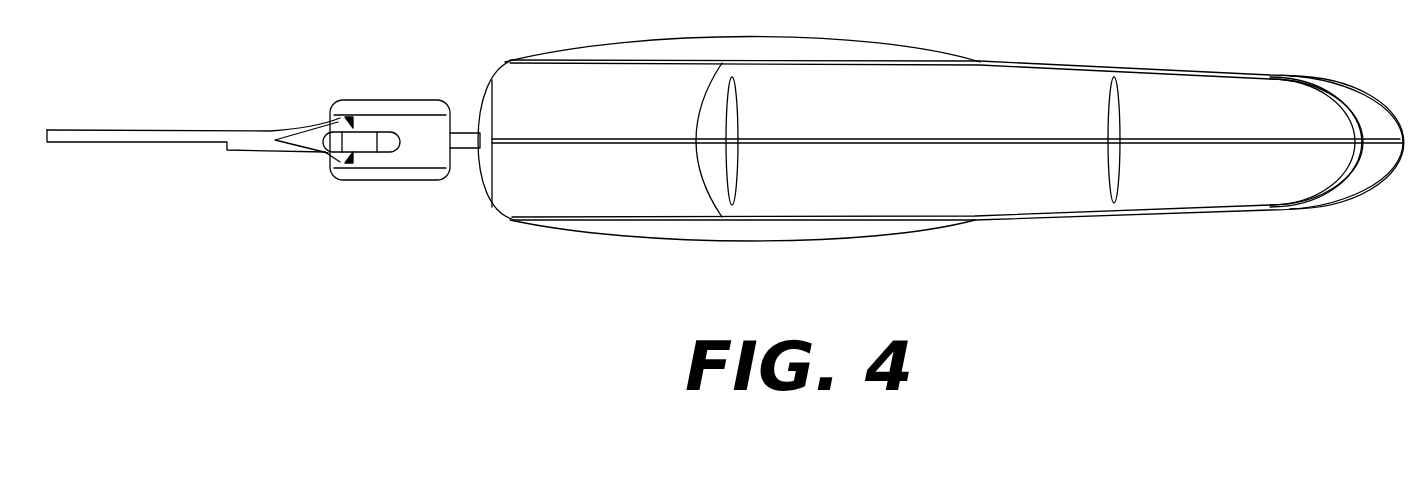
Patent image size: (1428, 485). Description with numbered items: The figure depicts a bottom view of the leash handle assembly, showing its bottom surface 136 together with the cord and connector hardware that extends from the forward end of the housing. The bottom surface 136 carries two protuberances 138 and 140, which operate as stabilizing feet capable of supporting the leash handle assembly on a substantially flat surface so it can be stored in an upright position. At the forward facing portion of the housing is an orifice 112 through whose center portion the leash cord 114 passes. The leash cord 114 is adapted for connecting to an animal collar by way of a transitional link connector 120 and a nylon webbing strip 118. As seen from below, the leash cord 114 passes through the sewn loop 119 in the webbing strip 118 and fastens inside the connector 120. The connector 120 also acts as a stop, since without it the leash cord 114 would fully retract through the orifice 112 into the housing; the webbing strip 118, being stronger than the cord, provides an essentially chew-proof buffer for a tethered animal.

The orifice 112 is at (483, 158).
The leash cord 114 is at (352, 142).
The nylon webbing strip 118 is at (142, 130).
The sewn loop 119 is at (312, 145).
The transitional link connector 120 is at (430, 130).
The bottom surface 136 is at (1273, 102).
The protuberance 138 is at (735, 107).
The protuberance 140 is at (1115, 105).